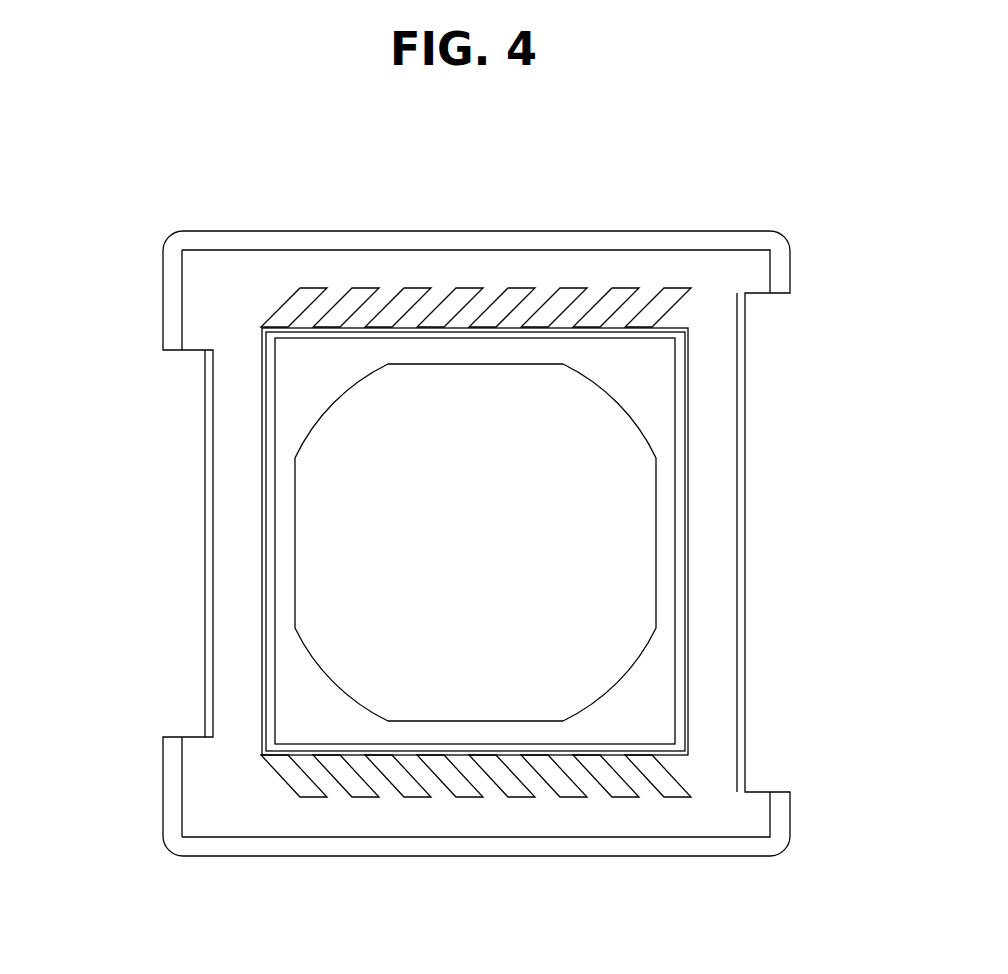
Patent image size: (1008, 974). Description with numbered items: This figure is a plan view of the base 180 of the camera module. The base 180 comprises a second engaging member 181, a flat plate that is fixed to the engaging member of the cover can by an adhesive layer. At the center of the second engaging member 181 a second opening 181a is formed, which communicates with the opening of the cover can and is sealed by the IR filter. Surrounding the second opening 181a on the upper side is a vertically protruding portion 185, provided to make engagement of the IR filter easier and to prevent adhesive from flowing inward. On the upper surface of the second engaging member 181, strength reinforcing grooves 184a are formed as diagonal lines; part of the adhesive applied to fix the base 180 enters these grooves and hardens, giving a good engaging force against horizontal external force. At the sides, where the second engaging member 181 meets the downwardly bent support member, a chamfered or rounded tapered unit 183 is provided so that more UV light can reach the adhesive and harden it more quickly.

The base 180 is at (114, 172).
The second engaging member 181 is at (625, 262).
The second opening 181a is at (642, 535).
The tapered unit 183 is at (172, 313).
The strength reinforcing grooves 184a is at (404, 296).
The protruding portion 185 is at (680, 403).